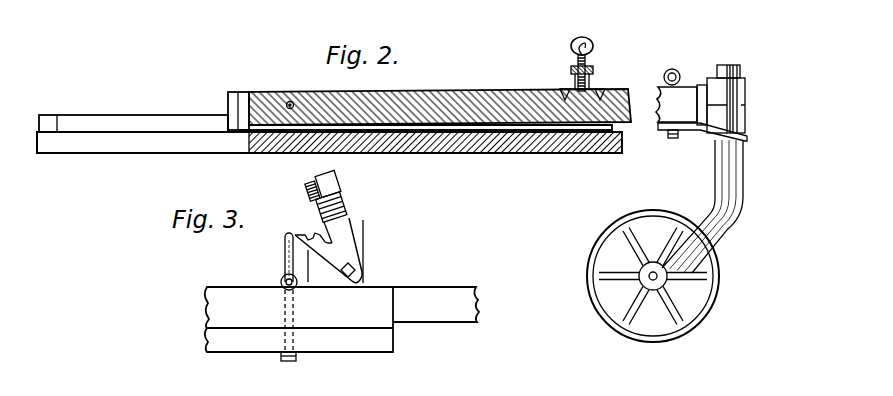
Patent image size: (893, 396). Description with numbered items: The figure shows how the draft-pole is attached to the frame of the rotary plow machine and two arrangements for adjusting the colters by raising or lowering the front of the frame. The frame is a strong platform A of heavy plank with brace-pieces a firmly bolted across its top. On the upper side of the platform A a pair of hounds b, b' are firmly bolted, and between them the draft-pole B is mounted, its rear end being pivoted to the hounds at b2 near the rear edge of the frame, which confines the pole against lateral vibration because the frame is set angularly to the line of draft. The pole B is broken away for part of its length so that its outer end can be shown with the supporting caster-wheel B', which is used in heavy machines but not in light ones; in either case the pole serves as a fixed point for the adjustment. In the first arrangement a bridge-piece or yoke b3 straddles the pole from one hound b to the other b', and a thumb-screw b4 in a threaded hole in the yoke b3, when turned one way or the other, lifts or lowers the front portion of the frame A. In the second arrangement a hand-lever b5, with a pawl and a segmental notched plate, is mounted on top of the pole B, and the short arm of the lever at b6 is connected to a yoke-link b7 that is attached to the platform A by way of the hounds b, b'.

In FIG. 2, the platform A is at (329, 144).
In FIG. 3, the platform A is at (299, 320).
In FIG. 2, the brace-pieces a is at (133, 122).
In FIG. 2, the draft-pole B is at (473, 97).
In FIG. 3, the draft-pole B is at (436, 304).
In FIG. 2, the caster-wheel B' is at (653, 262).
In FIG. 2, the hound b is at (408, 108).
In FIG. 3, the hound b' is at (299, 307).
In FIG. 2, the pivot b2 is at (290, 101).
In FIG. 2, the bridge-piece or yoke b3 is at (593, 71).
In FIG. 2, the thumb-screw b4 is at (581, 53).
In FIG. 3, the hand-lever b5 is at (338, 181).
In FIG. 3, the short arm of the lever b6 is at (292, 233).
In FIG. 3, the yoke-link b7 is at (285, 262).